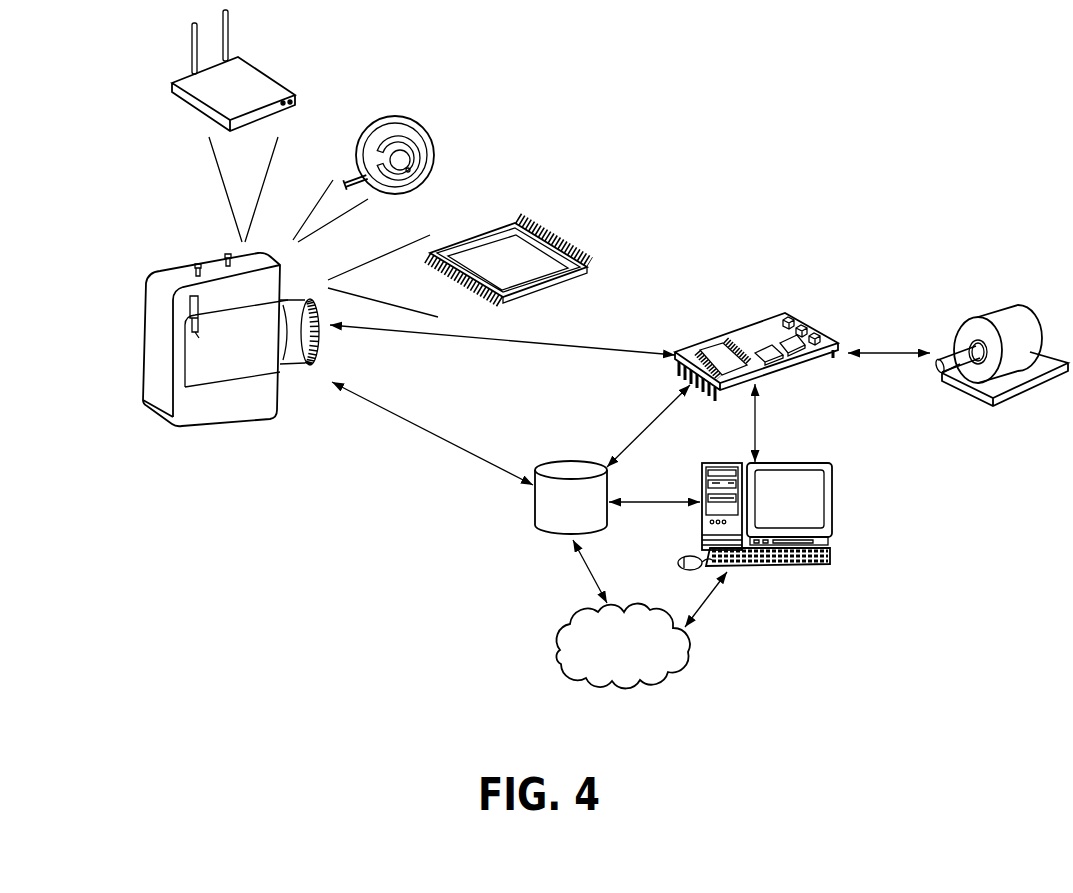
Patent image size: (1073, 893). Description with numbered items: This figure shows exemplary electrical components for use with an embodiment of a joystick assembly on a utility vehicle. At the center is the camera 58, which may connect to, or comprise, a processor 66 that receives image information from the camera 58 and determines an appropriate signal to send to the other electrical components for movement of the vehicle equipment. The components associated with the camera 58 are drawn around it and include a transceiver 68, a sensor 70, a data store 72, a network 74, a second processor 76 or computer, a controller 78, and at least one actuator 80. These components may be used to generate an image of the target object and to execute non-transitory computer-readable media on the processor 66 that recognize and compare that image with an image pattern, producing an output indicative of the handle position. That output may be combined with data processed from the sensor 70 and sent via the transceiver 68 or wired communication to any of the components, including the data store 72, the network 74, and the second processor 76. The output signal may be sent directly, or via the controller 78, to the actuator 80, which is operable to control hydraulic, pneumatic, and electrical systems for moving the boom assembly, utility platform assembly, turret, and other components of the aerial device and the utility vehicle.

The camera 58 is at (155, 358).
The processor 66 is at (520, 224).
The transceiver 68 is at (276, 40).
The sensor 70 is at (397, 117).
The data store 72 is at (548, 464).
The network 74 is at (680, 677).
The second processor 76 is at (799, 592).
The controller 78 is at (790, 313).
The actuator 80 is at (1015, 303).